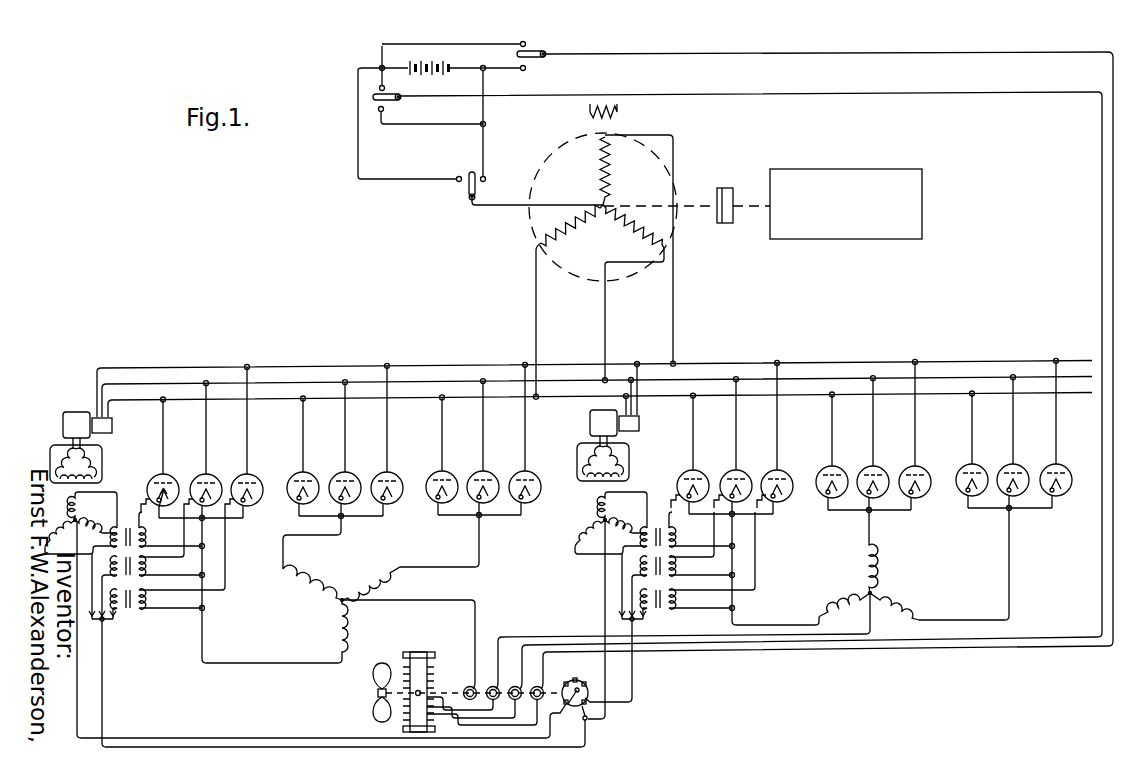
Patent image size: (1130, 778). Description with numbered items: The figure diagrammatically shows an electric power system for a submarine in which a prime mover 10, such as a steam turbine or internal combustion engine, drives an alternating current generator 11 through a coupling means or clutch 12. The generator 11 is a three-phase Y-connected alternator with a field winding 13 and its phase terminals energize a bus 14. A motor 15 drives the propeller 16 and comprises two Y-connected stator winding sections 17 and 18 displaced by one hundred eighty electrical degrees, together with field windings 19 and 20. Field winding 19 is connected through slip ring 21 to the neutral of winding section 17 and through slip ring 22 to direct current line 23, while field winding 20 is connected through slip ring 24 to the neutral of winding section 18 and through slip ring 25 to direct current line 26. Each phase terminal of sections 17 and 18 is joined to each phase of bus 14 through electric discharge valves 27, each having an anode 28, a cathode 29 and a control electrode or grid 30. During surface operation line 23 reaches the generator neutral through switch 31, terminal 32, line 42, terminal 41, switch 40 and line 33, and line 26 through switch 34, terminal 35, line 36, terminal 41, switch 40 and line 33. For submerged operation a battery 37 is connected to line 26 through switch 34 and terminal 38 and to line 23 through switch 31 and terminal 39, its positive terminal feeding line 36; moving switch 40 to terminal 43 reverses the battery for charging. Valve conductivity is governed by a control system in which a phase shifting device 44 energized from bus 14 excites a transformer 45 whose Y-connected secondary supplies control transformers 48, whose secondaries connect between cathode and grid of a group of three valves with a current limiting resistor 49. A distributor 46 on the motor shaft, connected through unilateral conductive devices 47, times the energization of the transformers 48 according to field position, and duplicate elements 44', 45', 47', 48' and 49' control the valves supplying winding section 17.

The prime mover 10 is at (846, 204).
The alternating current generator 11 is at (603, 266).
The coupling means or clutch 12 is at (725, 188).
The field winding 13 is at (605, 103).
The bus 14 is at (108, 401).
The motor 15 is at (531, 605).
The propeller 16 is at (377, 692).
The stator or armature winding section 17 is at (342, 598).
The stator or armature winding section 18 is at (874, 594).
The field winding 19 is at (409, 665).
The field winding 20 is at (408, 715).
The slip ring 21 is at (468, 686).
The slip ring 22 is at (517, 686).
The direct current line 23 is at (1102, 176).
The slip ring 24 is at (492, 686).
The slip ring 25 is at (540, 686).
The direct current line 26 is at (1113, 436).
The electric discharge valves 27 is at (196, 478).
The anode 28 is at (158, 477).
The cathode 29 is at (161, 510).
The control electrode or grid 30 is at (148, 486).
The switch 31 is at (398, 100).
The terminal 32 is at (379, 112).
The line 33 is at (537, 193).
The switch 34 is at (544, 51).
The terminal 35 is at (525, 71).
The line 36 is at (484, 108).
The battery 37 is at (432, 60).
The terminal 38 is at (522, 41).
The terminal 39 is at (385, 88).
The switch 40 is at (468, 197).
The terminal 41 is at (485, 176).
The line 42 is at (433, 112).
The terminal 43 is at (457, 176).
The phase shifting device 44 is at (592, 445).
The phase shifting device 44' is at (69, 447).
The transformer 45 is at (608, 603).
The transformer 45' is at (78, 521).
The distributor 46 is at (581, 681).
The unilateral conductive devices 47 is at (629, 628).
The unilateral conductive devices 47' is at (337, 650).
The control transformers 48 is at (693, 572).
The control transformers 48' is at (216, 573).
The current limiting resistor 49 is at (664, 485).
The current limiting resistor 49' is at (250, 511).